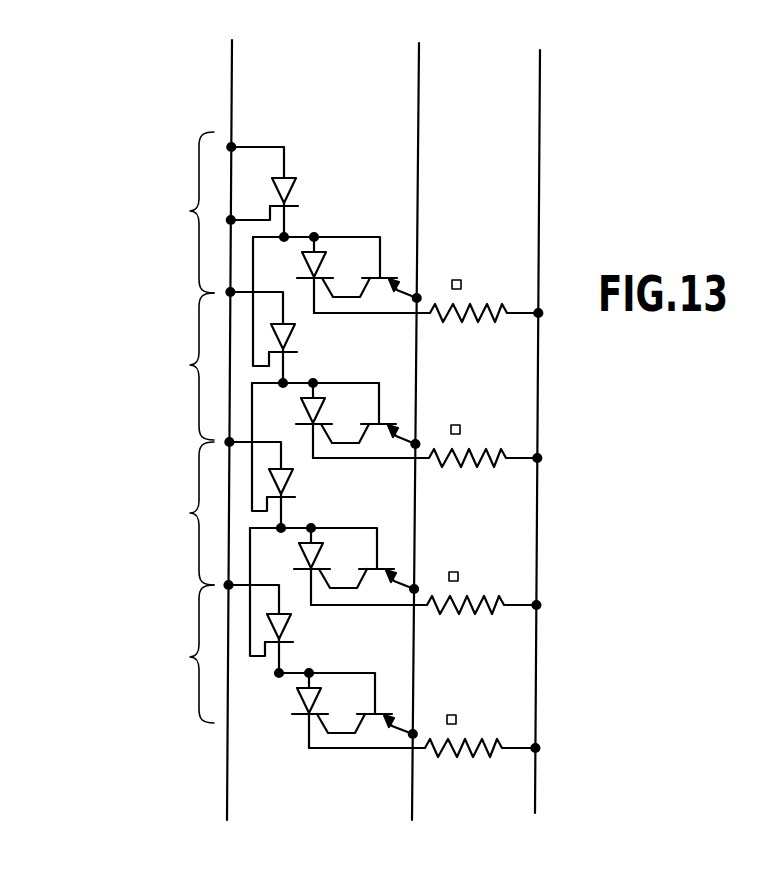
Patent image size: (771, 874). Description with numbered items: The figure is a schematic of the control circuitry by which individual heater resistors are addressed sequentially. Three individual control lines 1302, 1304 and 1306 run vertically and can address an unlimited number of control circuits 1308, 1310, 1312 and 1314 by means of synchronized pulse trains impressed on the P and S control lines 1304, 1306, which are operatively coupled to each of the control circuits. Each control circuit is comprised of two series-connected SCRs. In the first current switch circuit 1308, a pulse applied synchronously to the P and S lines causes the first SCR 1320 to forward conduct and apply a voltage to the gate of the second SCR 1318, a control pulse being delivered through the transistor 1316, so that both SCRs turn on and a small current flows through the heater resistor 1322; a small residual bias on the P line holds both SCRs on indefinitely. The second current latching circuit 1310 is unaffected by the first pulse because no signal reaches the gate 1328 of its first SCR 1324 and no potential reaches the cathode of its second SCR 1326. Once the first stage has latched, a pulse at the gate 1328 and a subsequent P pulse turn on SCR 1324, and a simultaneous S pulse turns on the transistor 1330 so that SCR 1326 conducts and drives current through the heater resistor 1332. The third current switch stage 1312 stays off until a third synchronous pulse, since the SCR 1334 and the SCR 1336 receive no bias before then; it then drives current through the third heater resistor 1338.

The control line 1302 is at (230, 62).
The P control line 1304 is at (418, 90).
The S control line 1306 is at (540, 166).
The first current switch circuit 1308 is at (190, 209).
The second current latching circuit 1310 is at (190, 365).
The third current switch stage 1312 is at (190, 513).
The control circuit 1314 is at (190, 657).
The transistor 1316 is at (390, 280).
The second SCR 1318 is at (318, 266).
The first SCR 1320 is at (300, 190).
The heater resistor 1322 is at (463, 321).
The first SCR of the second current latching circuit 1324 is at (293, 331).
The second SCR of the second current latching circuit 1326 is at (388, 378).
The gate 1328 is at (252, 313).
The transistor 1330 is at (383, 424).
The heater resistor 1332 is at (462, 466).
The SCR 1334 is at (290, 481).
The SCR 1336 is at (289, 621).
The third heater resistor 1338 is at (460, 613).